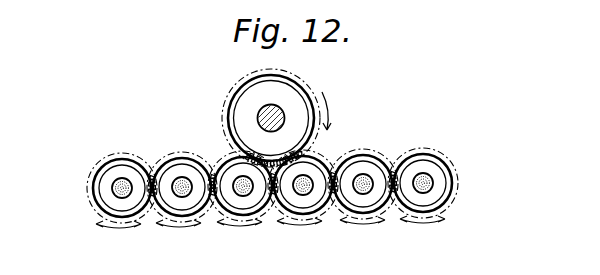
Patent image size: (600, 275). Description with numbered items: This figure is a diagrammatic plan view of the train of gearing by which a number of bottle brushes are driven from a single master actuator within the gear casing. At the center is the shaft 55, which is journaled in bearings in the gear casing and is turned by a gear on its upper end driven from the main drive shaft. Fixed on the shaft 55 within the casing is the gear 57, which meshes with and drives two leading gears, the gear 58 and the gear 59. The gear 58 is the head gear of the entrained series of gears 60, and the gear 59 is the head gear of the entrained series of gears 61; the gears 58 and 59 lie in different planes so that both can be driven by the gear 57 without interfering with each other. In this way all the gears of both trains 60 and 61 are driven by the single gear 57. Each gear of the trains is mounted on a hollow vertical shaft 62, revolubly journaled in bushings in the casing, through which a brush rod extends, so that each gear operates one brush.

The shaft 55 is at (282, 109).
The gear 57 is at (299, 155).
The gear 58 is at (219, 200).
The gear 59 is at (379, 182).
The train of gears 60 is at (172, 171).
The train of gears 61 is at (390, 175).
The hollow vertical shaft 62 is at (115, 190).